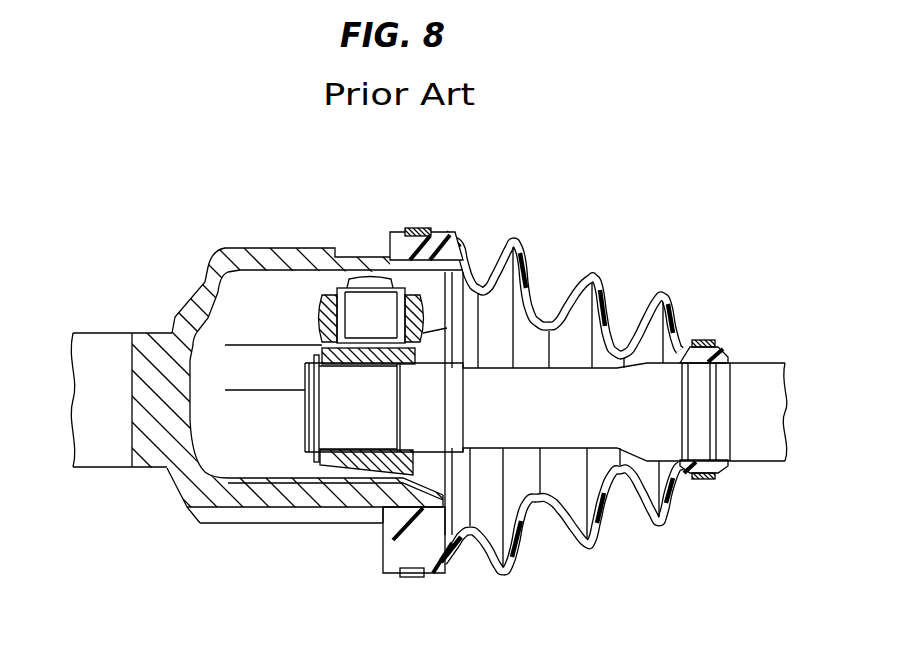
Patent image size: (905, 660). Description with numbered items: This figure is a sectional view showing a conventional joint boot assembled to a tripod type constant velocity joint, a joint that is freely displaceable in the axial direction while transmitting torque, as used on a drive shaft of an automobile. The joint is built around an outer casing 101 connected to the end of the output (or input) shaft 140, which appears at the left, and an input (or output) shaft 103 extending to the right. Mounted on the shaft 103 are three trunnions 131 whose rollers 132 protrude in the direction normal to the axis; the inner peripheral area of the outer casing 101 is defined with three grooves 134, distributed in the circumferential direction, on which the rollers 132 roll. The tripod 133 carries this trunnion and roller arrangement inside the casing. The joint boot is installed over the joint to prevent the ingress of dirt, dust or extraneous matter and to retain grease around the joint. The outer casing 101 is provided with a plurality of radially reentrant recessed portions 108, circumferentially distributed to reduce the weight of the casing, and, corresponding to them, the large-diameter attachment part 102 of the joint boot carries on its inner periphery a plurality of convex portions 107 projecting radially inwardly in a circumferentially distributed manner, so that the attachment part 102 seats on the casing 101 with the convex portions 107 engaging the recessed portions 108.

The outer casing 101 is at (233, 250).
The large-diameter attachment part 102 is at (440, 237).
The input (or output) shaft 103 is at (760, 452).
The convex portions 107 is at (383, 537).
The recessed portions 108 is at (327, 508).
The trunnions 131 is at (360, 308).
The rollers 132 is at (321, 298).
The tripod 133 is at (301, 468).
The grooves 134 is at (277, 273).
The output (or input) shaft 140 is at (114, 449).